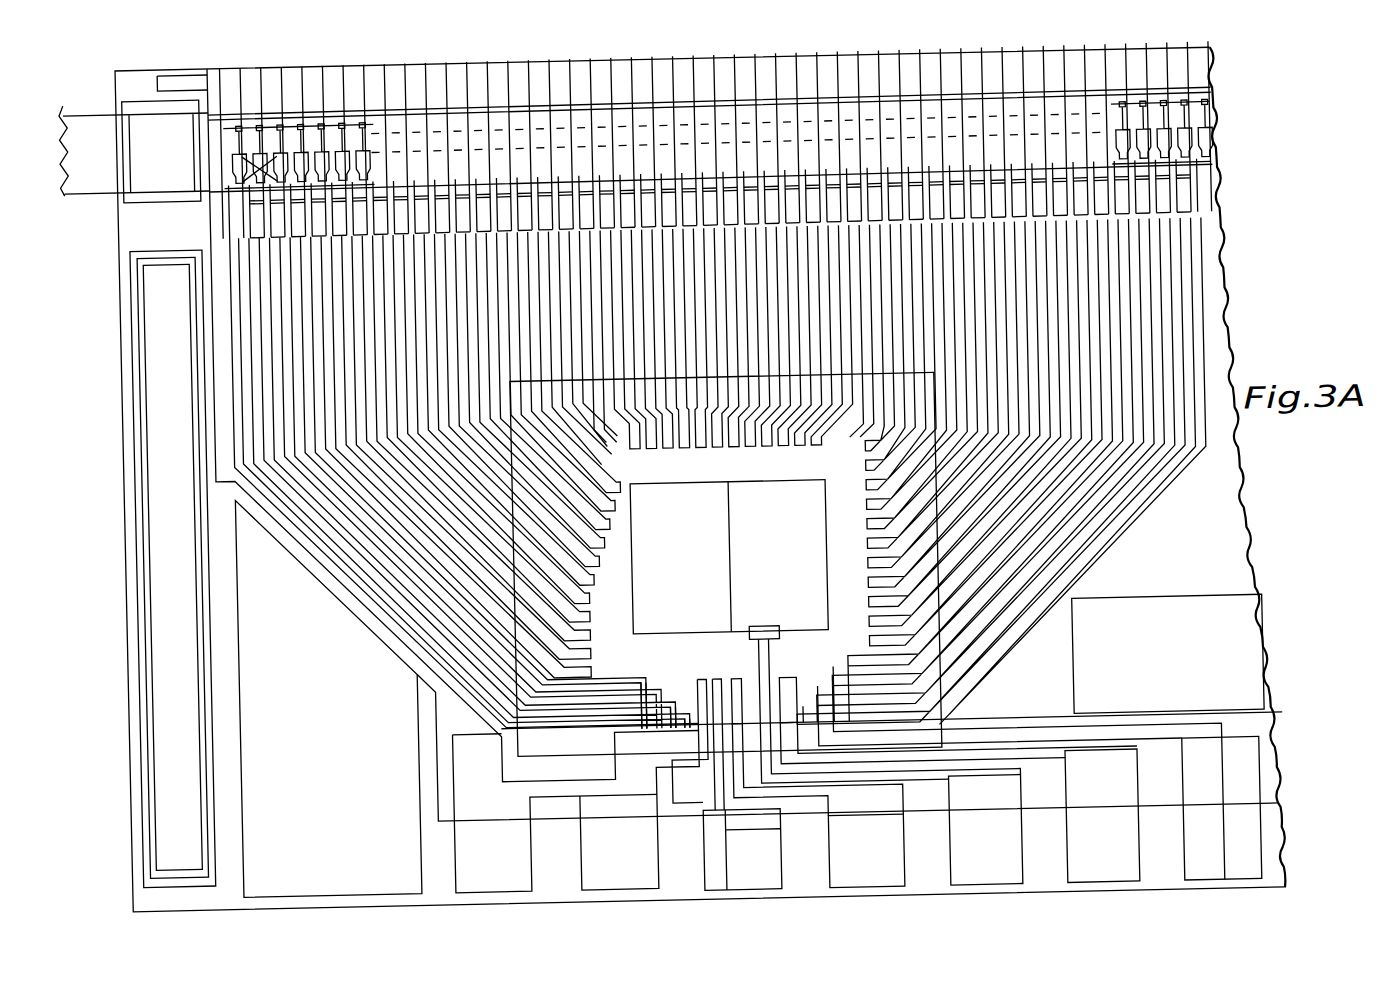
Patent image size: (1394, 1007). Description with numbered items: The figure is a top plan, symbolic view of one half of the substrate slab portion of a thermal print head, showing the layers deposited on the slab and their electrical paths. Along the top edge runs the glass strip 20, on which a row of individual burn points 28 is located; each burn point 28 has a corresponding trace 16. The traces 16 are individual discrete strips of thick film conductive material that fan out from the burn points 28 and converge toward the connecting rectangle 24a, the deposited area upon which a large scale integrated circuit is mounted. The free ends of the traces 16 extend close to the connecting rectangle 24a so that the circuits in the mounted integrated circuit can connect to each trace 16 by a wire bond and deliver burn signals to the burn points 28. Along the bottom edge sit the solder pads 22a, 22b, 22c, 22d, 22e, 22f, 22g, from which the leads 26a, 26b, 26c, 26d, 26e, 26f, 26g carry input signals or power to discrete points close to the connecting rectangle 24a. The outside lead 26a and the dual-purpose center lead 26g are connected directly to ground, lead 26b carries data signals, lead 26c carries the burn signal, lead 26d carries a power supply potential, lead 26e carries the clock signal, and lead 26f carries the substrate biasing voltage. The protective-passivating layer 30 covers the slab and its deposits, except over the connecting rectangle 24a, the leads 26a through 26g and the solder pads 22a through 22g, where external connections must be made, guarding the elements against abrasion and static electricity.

The traces 16 is at (580, 530).
The glass strip 20 is at (100, 164).
The solder pad 22a is at (492, 884).
The solder pad 22b is at (615, 887).
The solder pad 22c is at (750, 887).
The solder pad 22d is at (861, 888).
The solder pad 22e is at (987, 888).
The solder pad 22f is at (1102, 887).
The solder pad 22g is at (1209, 887).
The connecting rectangle 24a is at (746, 487).
The lead 26a is at (638, 679).
The lead 26b is at (682, 675).
The lead 26c is at (688, 692).
The lead 26d is at (703, 692).
The lead 26e is at (729, 722).
The lead 26f is at (750, 640).
The lead 26g is at (792, 681).
The burn points 28 is at (340, 129).
The protective-passivating layer 30 is at (736, 299).